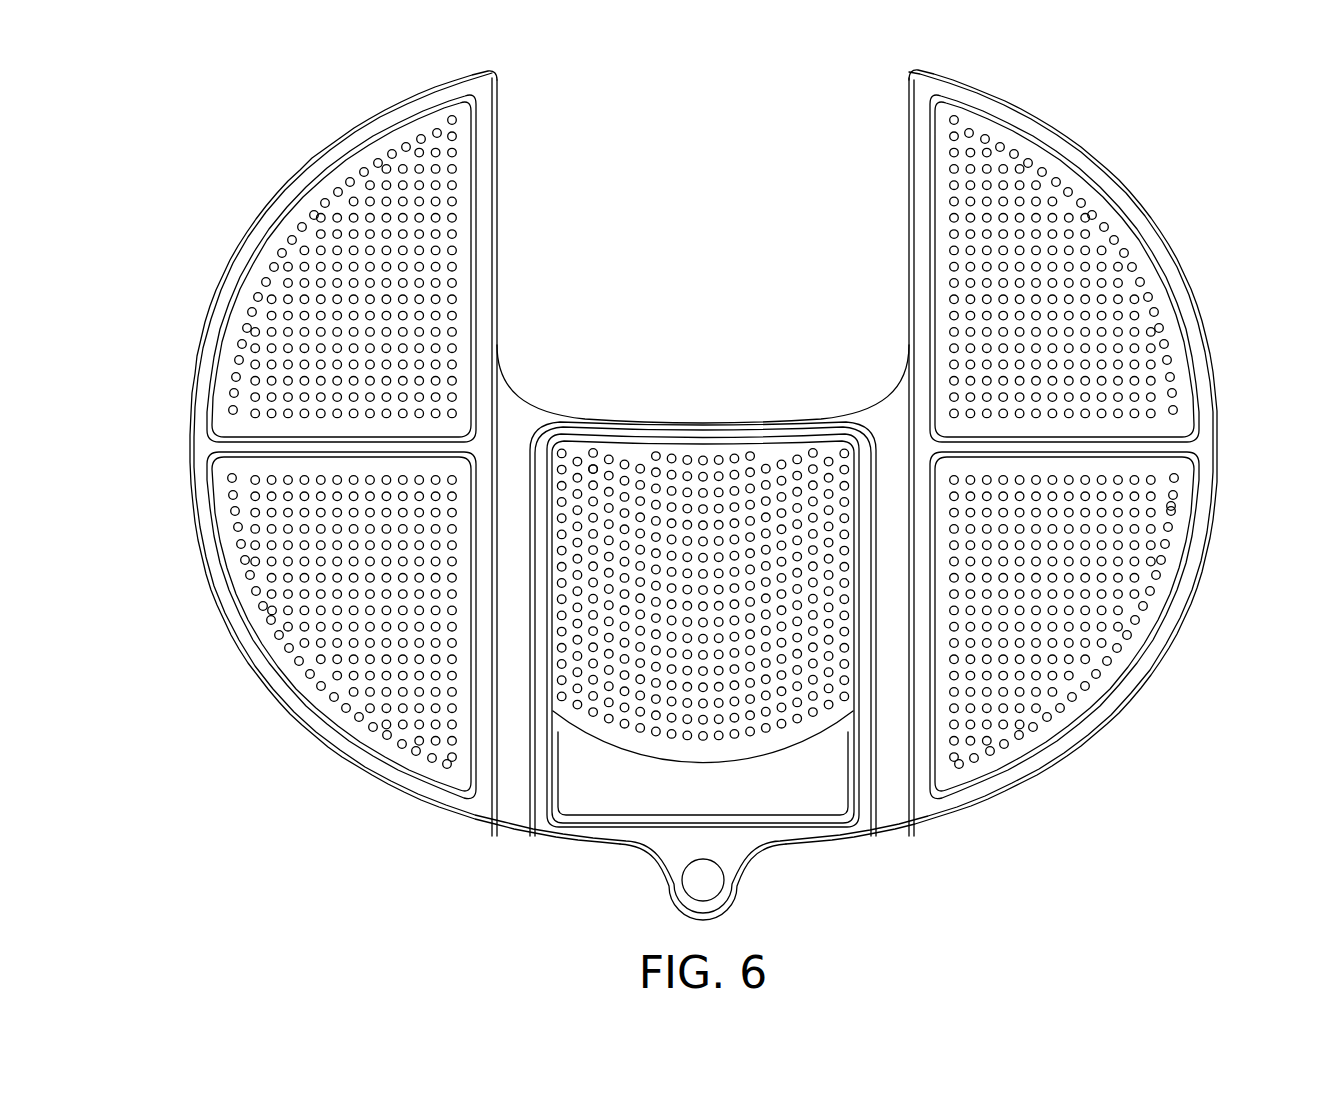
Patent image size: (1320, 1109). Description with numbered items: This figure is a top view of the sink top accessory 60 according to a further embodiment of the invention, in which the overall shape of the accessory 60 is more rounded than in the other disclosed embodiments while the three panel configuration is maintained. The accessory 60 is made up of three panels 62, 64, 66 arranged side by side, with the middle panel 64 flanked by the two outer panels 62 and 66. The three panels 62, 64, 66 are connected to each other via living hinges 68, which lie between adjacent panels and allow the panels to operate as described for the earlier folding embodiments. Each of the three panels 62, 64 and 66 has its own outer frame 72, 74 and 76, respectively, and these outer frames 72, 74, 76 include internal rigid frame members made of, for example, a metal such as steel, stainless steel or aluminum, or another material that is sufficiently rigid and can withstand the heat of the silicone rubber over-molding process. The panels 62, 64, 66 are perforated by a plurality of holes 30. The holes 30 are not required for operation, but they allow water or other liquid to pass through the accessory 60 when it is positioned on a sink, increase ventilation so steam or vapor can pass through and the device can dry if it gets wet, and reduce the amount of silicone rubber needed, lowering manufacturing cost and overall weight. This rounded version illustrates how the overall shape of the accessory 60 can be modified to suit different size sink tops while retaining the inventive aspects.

The sink top accessory 60 is at (1192, 162).
The panel 62 is at (316, 197).
The panel 64 is at (639, 463).
The panel 66 is at (1128, 236).
The living hinges 68 is at (517, 803).
The outer frame 72 is at (226, 293).
The outer frame 74 is at (762, 431).
The outer frame 76 is at (1200, 346).
The holes 30 is at (596, 465).